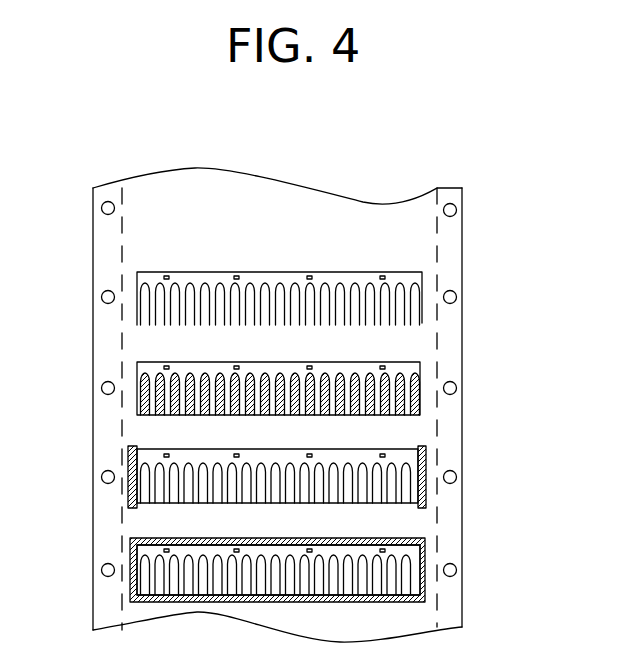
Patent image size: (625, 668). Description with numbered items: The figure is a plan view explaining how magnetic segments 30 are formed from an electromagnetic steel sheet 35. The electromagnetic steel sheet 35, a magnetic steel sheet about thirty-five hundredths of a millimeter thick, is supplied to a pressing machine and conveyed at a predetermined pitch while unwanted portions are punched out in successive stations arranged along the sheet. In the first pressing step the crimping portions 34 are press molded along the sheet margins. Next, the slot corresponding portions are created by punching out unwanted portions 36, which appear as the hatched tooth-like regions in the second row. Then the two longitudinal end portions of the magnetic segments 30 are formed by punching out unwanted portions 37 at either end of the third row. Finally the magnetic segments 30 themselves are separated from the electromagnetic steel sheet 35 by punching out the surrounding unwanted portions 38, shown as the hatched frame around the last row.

The magnetic segment 30 is at (414, 282).
The crimping portion 34 is at (165, 273).
The electromagnetic steel sheet 35 is at (236, 182).
The unwanted portion 36 is at (421, 380).
The unwanted portion 37 is at (424, 456).
The unwanted portion 38 is at (408, 538).